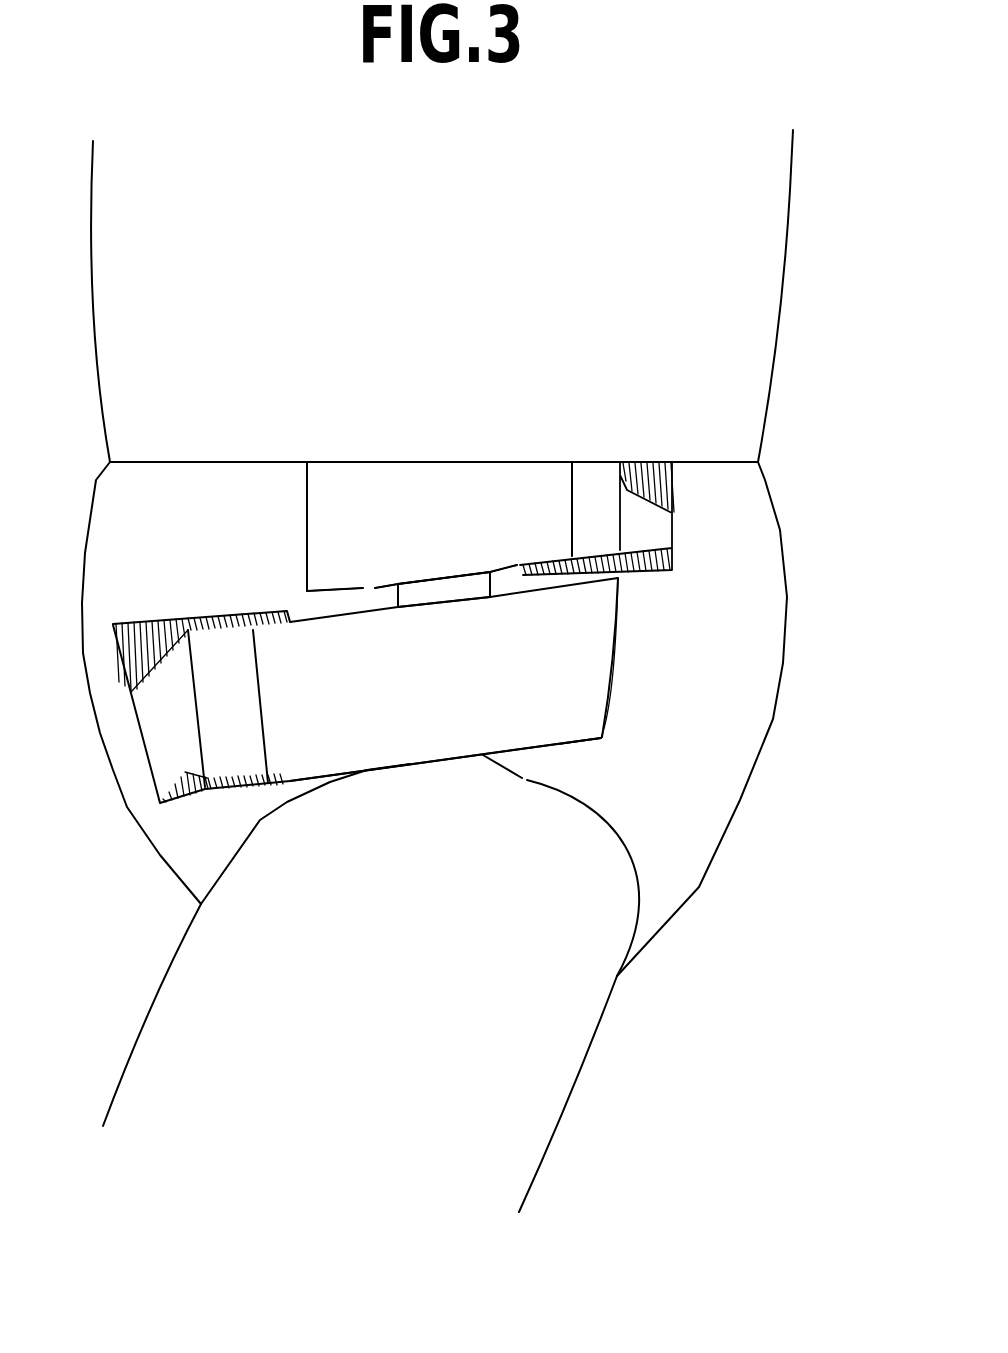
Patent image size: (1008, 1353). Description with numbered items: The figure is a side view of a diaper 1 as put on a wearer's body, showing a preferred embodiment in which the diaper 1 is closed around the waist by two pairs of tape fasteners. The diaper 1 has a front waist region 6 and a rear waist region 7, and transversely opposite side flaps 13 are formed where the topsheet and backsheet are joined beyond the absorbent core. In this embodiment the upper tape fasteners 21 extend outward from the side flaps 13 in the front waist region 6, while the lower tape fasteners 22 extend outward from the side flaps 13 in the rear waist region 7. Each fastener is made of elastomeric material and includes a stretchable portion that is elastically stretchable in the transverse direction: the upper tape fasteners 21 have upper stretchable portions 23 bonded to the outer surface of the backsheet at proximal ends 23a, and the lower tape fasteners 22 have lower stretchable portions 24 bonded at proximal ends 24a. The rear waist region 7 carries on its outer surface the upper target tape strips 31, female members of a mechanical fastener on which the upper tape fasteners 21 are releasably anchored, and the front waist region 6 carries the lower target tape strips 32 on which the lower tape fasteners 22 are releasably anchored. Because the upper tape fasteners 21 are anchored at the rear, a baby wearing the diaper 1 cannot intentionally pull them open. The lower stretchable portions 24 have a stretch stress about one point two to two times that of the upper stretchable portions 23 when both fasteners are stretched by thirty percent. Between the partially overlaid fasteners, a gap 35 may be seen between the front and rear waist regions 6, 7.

The diaper 1 is at (828, 463).
The front waist region 6 is at (110, 544).
The rear waist region 7 is at (764, 617).
The side flaps 13 is at (375, 590).
The upper tape fasteners 21 is at (413, 457).
The lower tape fasteners 22 is at (740, 688).
The upper stretchable portion 23 is at (520, 473).
The proximal end of upper stretchable portion 23a is at (328, 477).
The lower stretchable portion 24 is at (427, 733).
The proximal end of lower stretchable portion 24a is at (575, 720).
The upper target tape strips 31 is at (670, 513).
The lower target tape strips 32 is at (155, 748).
The gap 35 is at (435, 587).